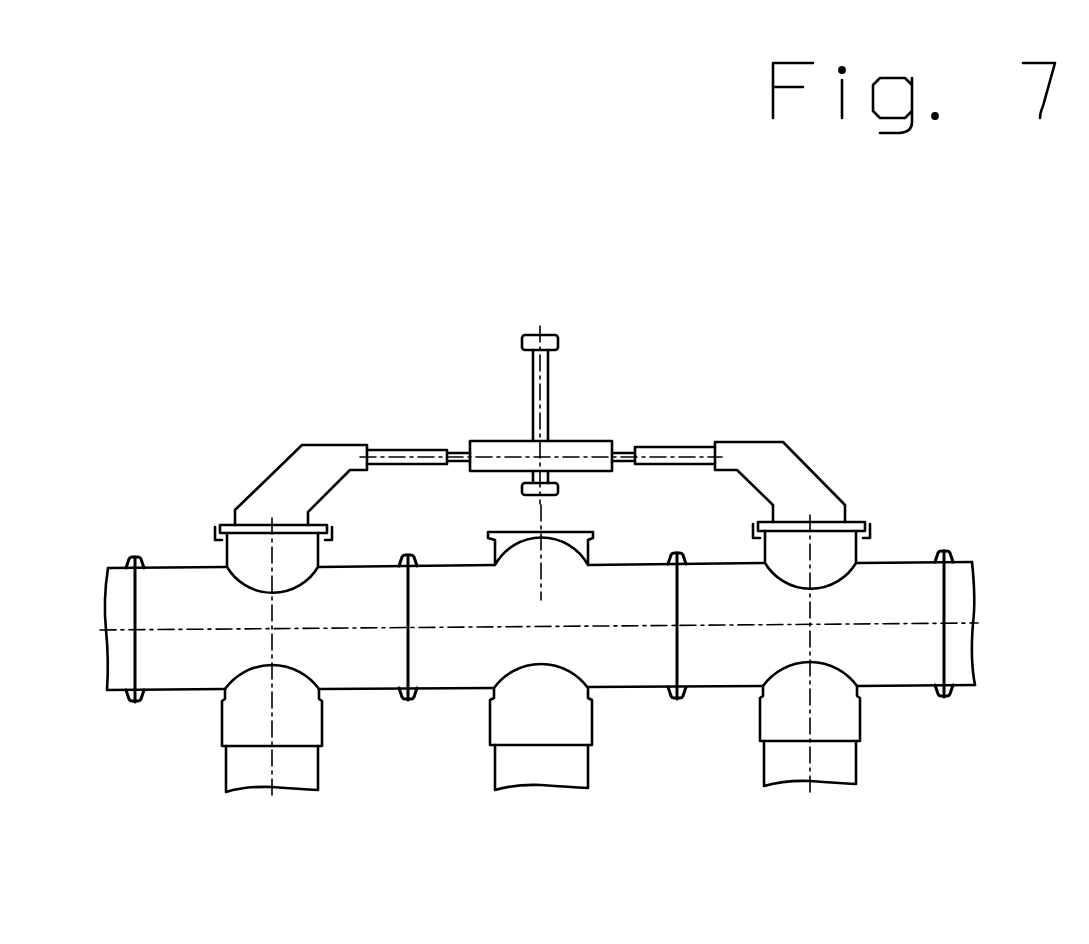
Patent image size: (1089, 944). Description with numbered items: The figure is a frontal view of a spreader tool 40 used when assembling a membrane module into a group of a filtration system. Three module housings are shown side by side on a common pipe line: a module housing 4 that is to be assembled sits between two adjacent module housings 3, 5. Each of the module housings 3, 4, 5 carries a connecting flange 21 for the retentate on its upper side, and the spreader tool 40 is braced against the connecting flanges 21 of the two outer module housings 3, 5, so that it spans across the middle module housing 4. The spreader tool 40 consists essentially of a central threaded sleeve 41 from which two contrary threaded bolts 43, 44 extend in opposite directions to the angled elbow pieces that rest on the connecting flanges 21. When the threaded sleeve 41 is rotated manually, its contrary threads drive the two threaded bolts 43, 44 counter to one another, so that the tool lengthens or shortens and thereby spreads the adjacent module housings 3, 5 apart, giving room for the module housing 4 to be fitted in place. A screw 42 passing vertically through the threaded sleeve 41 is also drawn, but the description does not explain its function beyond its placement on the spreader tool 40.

The connecting flange 21 is at (940, 460).
The module housing 3 is at (375, 820).
The module housing 4 is at (633, 812).
The module housing 5 is at (723, 813).
The spreader tool 40 is at (540, 536).
The threaded sleeve 41 is at (592, 448).
The clamping screw 42 is at (598, 310).
The threaded bolt 43 is at (687, 447).
The threaded bolt 44 is at (393, 448).